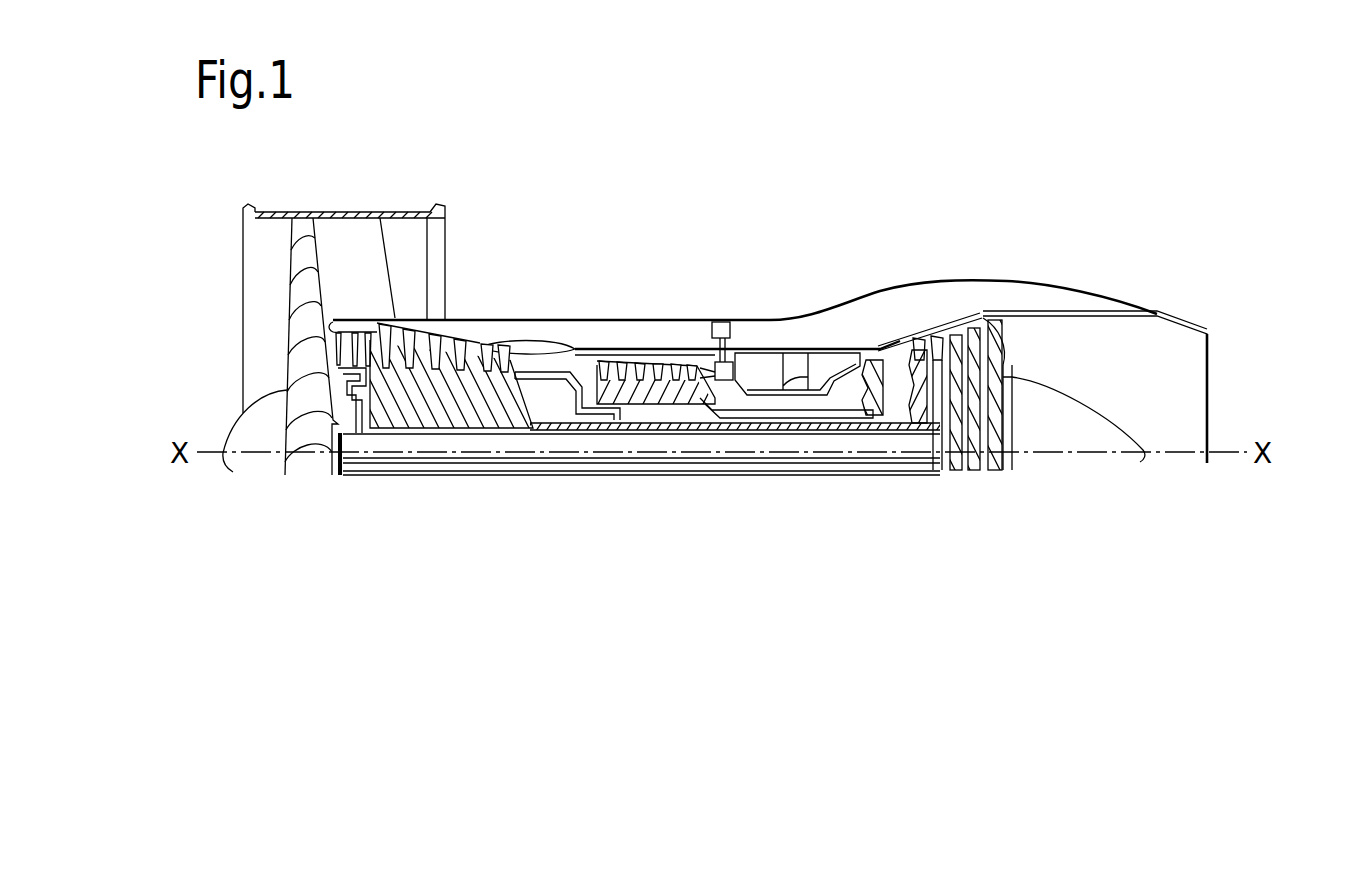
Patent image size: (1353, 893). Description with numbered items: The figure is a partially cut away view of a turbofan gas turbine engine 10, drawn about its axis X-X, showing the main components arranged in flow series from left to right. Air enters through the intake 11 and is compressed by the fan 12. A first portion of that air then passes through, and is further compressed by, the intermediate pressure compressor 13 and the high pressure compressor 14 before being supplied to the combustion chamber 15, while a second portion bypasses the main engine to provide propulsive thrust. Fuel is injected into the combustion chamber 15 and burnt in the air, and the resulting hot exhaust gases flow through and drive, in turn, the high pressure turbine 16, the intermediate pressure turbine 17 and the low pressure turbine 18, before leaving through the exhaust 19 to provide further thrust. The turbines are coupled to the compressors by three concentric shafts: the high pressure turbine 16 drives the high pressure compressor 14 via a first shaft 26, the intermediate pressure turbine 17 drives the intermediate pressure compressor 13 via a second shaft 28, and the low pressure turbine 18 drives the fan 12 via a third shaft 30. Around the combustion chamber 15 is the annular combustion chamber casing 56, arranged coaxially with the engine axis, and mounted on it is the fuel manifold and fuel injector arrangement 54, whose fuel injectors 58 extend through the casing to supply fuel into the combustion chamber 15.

The turbofan gas turbine engine 10 is at (637, 232).
The intake 11 is at (204, 314).
The fan 12 is at (310, 252).
The intermediate pressure compressor 13 is at (455, 380).
The high pressure compressor 14 is at (643, 350).
The combustion chamber 15 is at (797, 335).
The high pressure turbine 16 is at (876, 350).
The intermediate pressure turbine 17 is at (920, 355).
The low pressure turbine 18 is at (1000, 345).
The exhaust 19 is at (1185, 410).
The first shaft 26 is at (840, 414).
The second shaft 28 is at (587, 428).
The third shaft 30 is at (450, 468).
The fuel manifold and fuel injector arrangement 54 is at (718, 307).
The annular combustion chamber casing 56 is at (757, 348).
The fuel injector 58 is at (715, 381).